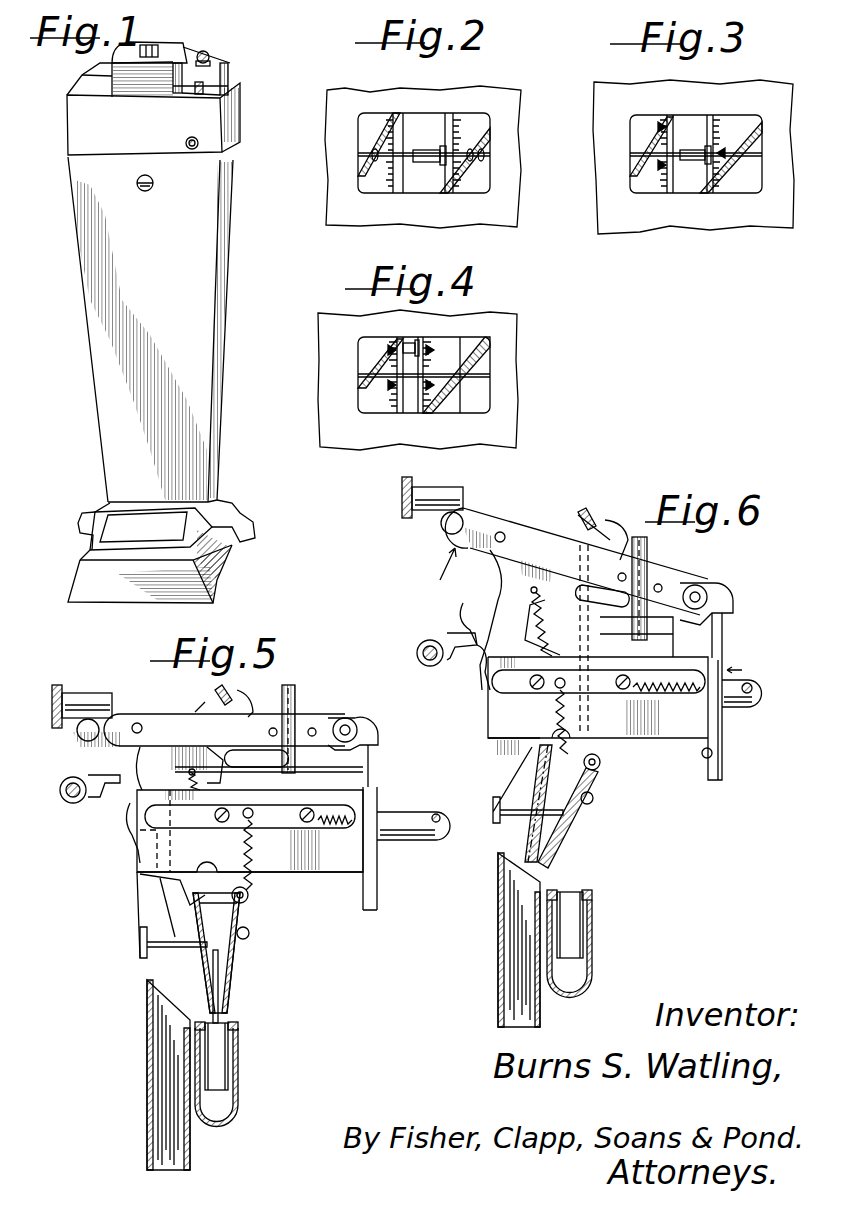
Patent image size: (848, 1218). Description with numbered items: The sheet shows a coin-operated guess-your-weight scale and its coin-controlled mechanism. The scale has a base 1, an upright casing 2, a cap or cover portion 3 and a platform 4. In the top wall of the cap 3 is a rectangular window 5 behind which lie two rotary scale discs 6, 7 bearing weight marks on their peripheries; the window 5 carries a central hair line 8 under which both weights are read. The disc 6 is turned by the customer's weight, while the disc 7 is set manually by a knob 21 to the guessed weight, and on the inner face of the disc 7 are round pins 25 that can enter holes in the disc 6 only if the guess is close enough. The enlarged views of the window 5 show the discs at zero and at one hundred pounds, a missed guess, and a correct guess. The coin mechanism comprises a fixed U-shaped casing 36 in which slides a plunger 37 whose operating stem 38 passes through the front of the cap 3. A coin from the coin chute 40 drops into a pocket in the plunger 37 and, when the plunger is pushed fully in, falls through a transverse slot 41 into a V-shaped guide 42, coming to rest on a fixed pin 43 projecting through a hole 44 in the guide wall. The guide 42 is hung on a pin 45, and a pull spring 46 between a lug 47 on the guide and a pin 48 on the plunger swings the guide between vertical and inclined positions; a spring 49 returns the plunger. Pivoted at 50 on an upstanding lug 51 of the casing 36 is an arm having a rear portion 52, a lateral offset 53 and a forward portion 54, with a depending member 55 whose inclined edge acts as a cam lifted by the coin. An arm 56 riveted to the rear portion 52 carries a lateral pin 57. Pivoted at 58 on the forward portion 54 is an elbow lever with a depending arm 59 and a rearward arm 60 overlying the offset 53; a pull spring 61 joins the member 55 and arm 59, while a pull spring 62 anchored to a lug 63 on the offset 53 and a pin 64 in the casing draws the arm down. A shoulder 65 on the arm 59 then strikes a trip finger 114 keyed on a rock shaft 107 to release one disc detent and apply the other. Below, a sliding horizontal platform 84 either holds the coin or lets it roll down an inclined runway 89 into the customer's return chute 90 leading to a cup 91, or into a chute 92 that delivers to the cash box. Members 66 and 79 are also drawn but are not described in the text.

In FIG. 1, the base 1 is at (222, 578).
In FIG. 1, the upright casing 2 is at (190, 338).
In FIG. 1, the cap or cover portion 3 is at (240, 108).
In FIG. 2, the cap or cover portion 3 is at (510, 150).
In FIG. 3, the cap or cover portion 3 is at (762, 86).
In FIG. 4, the cap or cover portion 3 is at (505, 383).
In FIG. 1, the platform 4 is at (110, 532).
In FIG. 1, the rectangular window 5 is at (152, 46).
In FIG. 2, the rectangular window 5 is at (424, 118).
In FIG. 3, the rectangular window 5 is at (690, 118).
In FIG. 4, the rectangular window 5 is at (424, 340).
In FIG. 2, the rotary scale disc 6 is at (374, 120).
In FIG. 3, the rotary scale disc 6 is at (648, 120).
In FIG. 4, the rotary scale disc 6 is at (365, 358).
In FIG. 2, the rotary scale disc 7 is at (470, 122).
In FIG. 3, the rotary scale disc 7 is at (732, 125).
In FIG. 4, the rotary scale disc 7 is at (450, 362).
In FIG. 2, the hair line 8 is at (372, 153).
In FIG. 3, the hair line 8 is at (630, 148).
In FIG. 4, the hair line 8 is at (372, 377).
In FIG. 1, the knob 21 is at (209, 53).
In FIG. 2, the round pins 25 is at (428, 145).
In FIG. 3, the round pins 25 is at (690, 148).
In FIG. 4, the round pins 25 is at (408, 342).
In FIG. 6, the U-shaped casing 36 is at (650, 727).
In FIG. 5, the U-shaped casing 36 is at (302, 848).
In FIG. 6, the plunger 37 is at (660, 655).
In FIG. 5, the plunger 37 is at (318, 782).
In FIG. 1, the operating stem 38 is at (185, 143).
In FIG. 6, the operating stem 38 is at (746, 683).
In FIG. 5, the operating stem 38 is at (406, 828).
In FIG. 1, the coin chute 40 is at (215, 85).
In FIG. 6, the coin chute 40 is at (648, 557).
In FIG. 5, the coin chute 40 is at (296, 702).
In FIG. 6, the transverse slot 41 is at (556, 742).
In FIG. 5, the transverse slot 41 is at (211, 862).
In FIG. 6, the V-shaped guide 42 is at (568, 830).
In FIG. 5, the V-shaped guide 42 is at (228, 970).
In FIG. 6, the fixed pin 43 is at (522, 812).
In FIG. 5, the fixed pin 43 is at (181, 945).
In FIG. 6, the hole 44 is at (540, 805).
In FIG. 5, the hole 44 is at (200, 947).
In FIG. 6, the pin 45 is at (601, 763).
In FIG. 5, the pin 45 is at (233, 895).
In FIG. 6, the pull spring 46 is at (578, 748).
In FIG. 5, the pull spring 46 is at (251, 849).
In FIG. 6, the lug 47 is at (594, 798).
In FIG. 5, the lug 47 is at (249, 935).
In FIG. 6, the pin 48 is at (557, 688).
In FIG. 5, the pin 48 is at (253, 813).
In FIG. 6, the spring 49 is at (665, 692).
In FIG. 5, the spring 49 is at (340, 818).
In FIG. 6, the pivot 50 is at (712, 580).
In FIG. 5, the pivot 50 is at (352, 721).
In FIG. 6, the upstanding lug 51 is at (717, 623).
In FIG. 5, the upstanding lug 51 is at (370, 752).
In FIG. 6, the straight rear portion 52 is at (668, 582).
In FIG. 5, the straight rear portion 52 is at (318, 720).
In FIG. 6, the lateral offset 53 is at (705, 565).
In FIG. 5, the lateral offset 53 is at (258, 715).
In FIG. 6, the straight forward portion 54 is at (545, 540).
In FIG. 5, the straight forward portion 54 is at (183, 720).
In FIG. 6, the depending member 55 is at (590, 605).
In FIG. 5, the depending member 55 is at (260, 765).
In FIG. 6, the arm 56 is at (480, 523).
In FIG. 5, the arm 56 is at (124, 715).
In FIG. 6, the lateral pin 57 is at (446, 529).
In FIG. 5, the lateral pin 57 is at (80, 738).
In FIG. 6, the pivot 58 is at (505, 533).
In FIG. 5, the pivot 58 is at (140, 724).
In FIG. 6, the depending arm 59 is at (498, 568).
In FIG. 5, the depending arm 59 is at (160, 758).
In FIG. 6, the rearwardly extending arm 60 is at (630, 545).
In FIG. 5, the rearwardly extending arm 60 is at (203, 702).
In FIG. 6, the pull spring 61 is at (536, 630).
In FIG. 5, the pull spring 61 is at (197, 784).
In FIG. 6, the pull spring 62 is at (592, 512).
In FIG. 5, the pull spring 62 is at (226, 694).
In FIG. 6, the lug 63 is at (620, 525).
In FIG. 5, the lug 63 is at (247, 705).
In FIG. 6, the pin 64 is at (540, 650).
In FIG. 6, the shoulder 65 is at (463, 606).
In FIG. 5, the shoulder 65 is at (130, 842).
In FIG. 6, the block 66 is at (402, 493).
In FIG. 5, the block 66 is at (52, 697).
In FIG. 6, the rod 79 is at (435, 490).
In FIG. 5, the rod 79 is at (92, 700).
In FIG. 6, the horizontal platform 84 is at (593, 895).
In FIG. 5, the horizontal platform 84 is at (240, 1028).
In FIG. 6, the inclined runway 89 is at (578, 926).
In FIG. 5, the inclined runway 89 is at (215, 1063).
In FIG. 6, the customer's return chute 90 is at (592, 975).
In FIG. 5, the customer's return chute 90 is at (238, 1102).
In FIG. 1, the cup 91 is at (147, 191).
In FIG. 6, the chute 92 is at (500, 944).
In FIG. 5, the chute 92 is at (150, 1060).
In FIG. 6, the rock shaft 107 is at (432, 666).
In FIG. 5, the rock shaft 107 is at (75, 803).
In FIG. 6, the trip finger 114 is at (460, 640).
In FIG. 5, the trip finger 114 is at (108, 786).